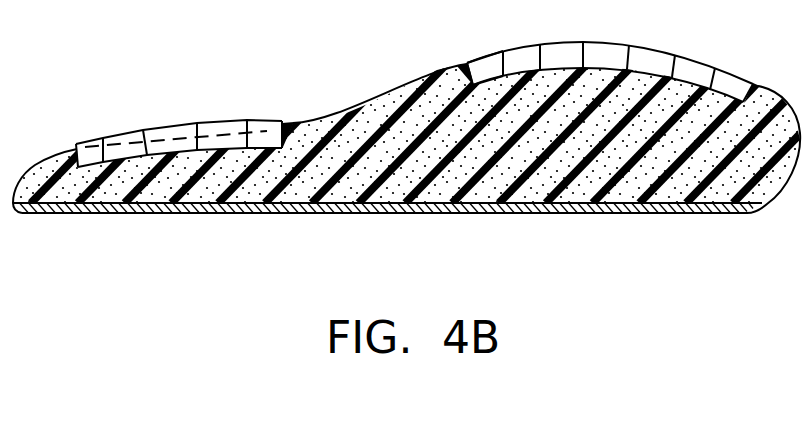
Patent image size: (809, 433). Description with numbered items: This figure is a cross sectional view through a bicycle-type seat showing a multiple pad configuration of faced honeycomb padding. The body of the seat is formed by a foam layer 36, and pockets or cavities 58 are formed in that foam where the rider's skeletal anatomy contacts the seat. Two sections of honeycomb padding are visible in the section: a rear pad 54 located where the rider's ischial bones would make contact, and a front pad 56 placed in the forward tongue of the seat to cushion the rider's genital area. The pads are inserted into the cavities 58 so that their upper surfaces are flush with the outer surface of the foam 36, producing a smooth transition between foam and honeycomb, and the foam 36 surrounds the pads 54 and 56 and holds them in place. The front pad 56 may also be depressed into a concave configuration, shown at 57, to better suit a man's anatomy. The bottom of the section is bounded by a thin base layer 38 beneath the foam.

The foam layer 36 is at (218, 213).
The bottom surface 38 is at (505, 213).
The honeycomb padding section 54 is at (598, 48).
The front pad 56 is at (221, 128).
The concave configuration 57 is at (133, 141).
The cavities 58 is at (466, 64).